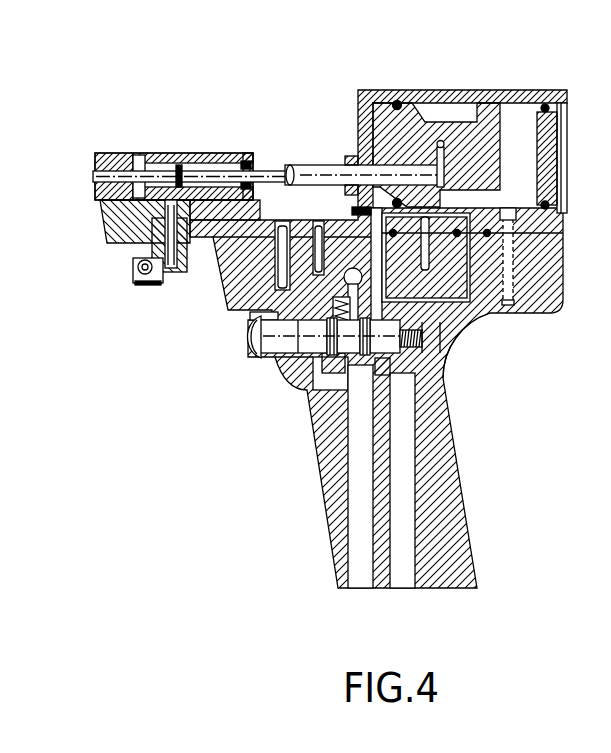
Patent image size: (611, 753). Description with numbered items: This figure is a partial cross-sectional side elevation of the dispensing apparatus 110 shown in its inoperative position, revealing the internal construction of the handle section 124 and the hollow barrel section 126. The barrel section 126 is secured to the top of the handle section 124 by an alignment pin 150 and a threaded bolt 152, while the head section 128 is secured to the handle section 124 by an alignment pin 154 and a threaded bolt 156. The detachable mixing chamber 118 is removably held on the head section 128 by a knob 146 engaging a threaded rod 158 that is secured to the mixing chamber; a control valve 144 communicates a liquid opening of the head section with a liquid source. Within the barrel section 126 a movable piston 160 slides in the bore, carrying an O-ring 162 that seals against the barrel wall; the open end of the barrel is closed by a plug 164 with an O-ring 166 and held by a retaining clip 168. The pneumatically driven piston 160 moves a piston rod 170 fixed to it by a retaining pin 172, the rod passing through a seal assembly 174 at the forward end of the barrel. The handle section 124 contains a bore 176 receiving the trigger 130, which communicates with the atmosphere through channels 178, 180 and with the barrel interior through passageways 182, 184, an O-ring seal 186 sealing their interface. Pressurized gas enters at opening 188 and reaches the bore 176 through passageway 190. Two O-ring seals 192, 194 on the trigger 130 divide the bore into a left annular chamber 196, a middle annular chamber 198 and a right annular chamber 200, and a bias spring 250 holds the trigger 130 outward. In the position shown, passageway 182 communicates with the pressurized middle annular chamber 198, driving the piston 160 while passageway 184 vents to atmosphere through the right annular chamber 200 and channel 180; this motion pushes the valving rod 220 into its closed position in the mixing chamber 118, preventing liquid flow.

The dispensing apparatus 110 is at (524, 83).
The mixing chamber 118 is at (160, 153).
The handle section 124 is at (452, 483).
The barrel section 126 is at (425, 90).
The head section 128 is at (112, 228).
The trigger 130 is at (248, 338).
The control valve 144 is at (137, 272).
The knob 146 is at (160, 275).
The alignment pin 150 is at (458, 288).
The threaded bolt 152 is at (508, 300).
The alignment pin 154 is at (317, 210).
The threaded bolt 156 is at (278, 220).
The threaded rod 158 is at (110, 215).
The movable piston 160 is at (455, 120).
The O-ring 162 is at (397, 102).
The plug 164 is at (565, 125).
The O-ring 166 is at (547, 104).
The retaining clip 168 is at (560, 198).
The piston rod 170 is at (322, 172).
The retaining pin 172 is at (434, 189).
The seal assembly 174 is at (357, 159).
The bore 176 is at (438, 342).
The channel 178 is at (363, 583).
The channel 180 is at (405, 585).
The passageway 182 is at (470, 268).
The passageway 184 is at (370, 253).
The O-ring seal 186 is at (490, 230).
The opening 188 is at (253, 317).
The passageway 190 is at (333, 298).
The O-ring seal 192 is at (312, 383).
The O-ring seal 194 is at (388, 370).
The left annular chamber 196 is at (283, 372).
The middle annular chamber 198 is at (350, 367).
The right annular chamber 200 is at (443, 383).
The valving rod 220 is at (255, 172).
The bias spring 250 is at (440, 357).